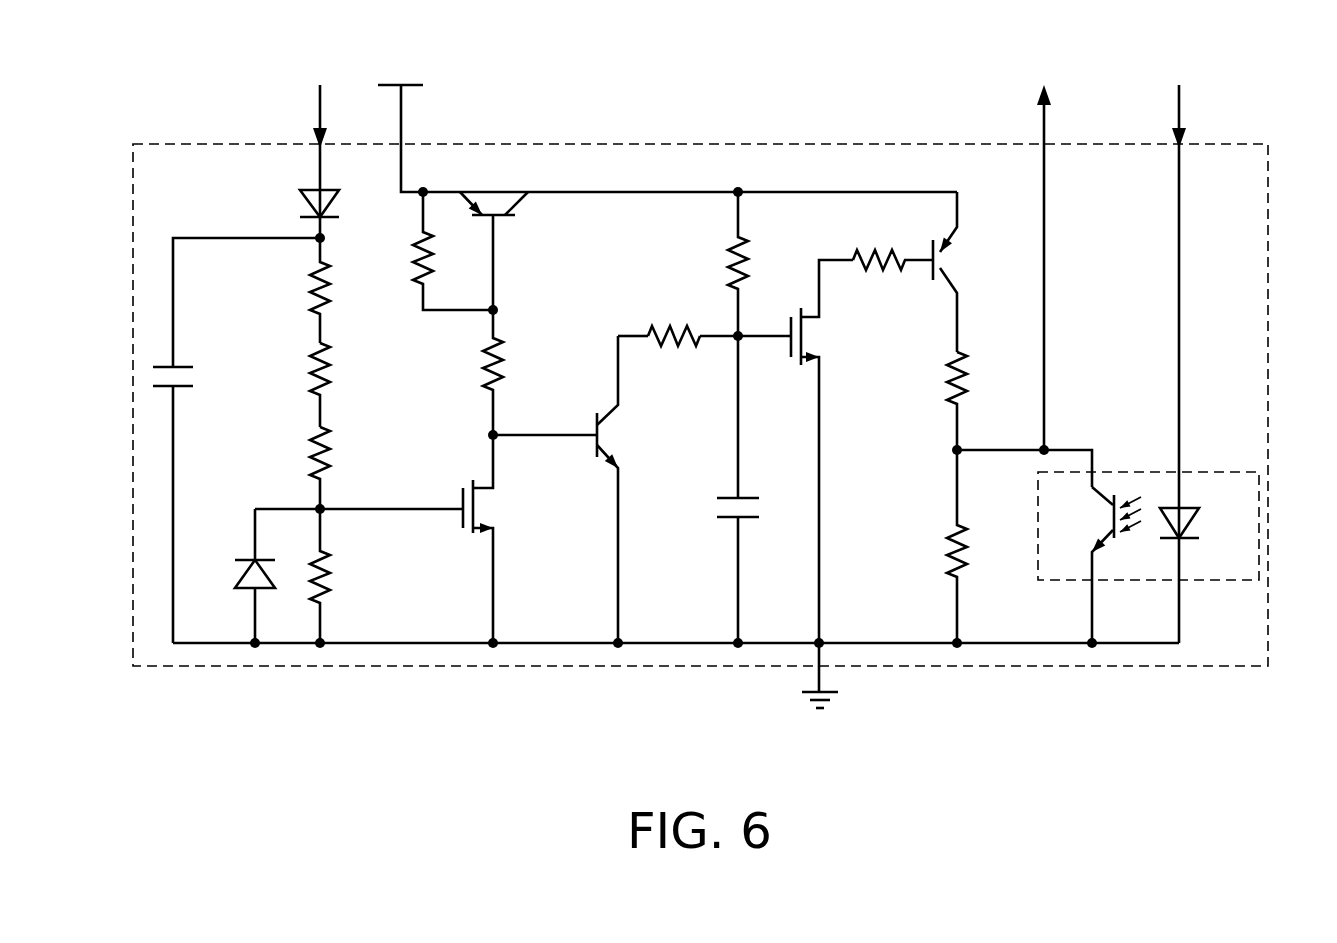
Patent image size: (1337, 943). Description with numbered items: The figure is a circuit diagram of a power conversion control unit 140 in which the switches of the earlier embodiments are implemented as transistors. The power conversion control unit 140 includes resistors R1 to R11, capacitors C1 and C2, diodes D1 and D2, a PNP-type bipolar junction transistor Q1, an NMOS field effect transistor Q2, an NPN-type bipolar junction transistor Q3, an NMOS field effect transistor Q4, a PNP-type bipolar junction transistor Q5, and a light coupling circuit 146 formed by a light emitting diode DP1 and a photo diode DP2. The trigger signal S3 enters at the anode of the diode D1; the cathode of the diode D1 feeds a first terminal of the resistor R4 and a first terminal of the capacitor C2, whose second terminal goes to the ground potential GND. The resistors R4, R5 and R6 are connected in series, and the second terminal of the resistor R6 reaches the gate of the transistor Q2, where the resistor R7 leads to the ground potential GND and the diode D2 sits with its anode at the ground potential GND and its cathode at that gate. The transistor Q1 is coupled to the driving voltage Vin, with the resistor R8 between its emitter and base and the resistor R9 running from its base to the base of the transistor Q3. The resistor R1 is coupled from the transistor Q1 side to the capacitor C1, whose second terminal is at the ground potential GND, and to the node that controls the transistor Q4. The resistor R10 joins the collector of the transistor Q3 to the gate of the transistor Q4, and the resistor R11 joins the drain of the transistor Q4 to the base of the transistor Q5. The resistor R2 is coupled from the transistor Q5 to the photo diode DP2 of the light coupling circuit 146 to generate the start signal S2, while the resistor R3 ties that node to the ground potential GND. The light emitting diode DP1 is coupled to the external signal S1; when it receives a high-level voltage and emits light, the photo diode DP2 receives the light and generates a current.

The power conversion control unit 140 is at (1268, 345).
The light coupling circuit 146 is at (1237, 472).
The diode D1 is at (339, 213).
The diode D2 is at (236, 576).
The capacitor C1 is at (755, 489).
The capacitor C2 is at (194, 380).
The resistor R1 is at (756, 264).
The resistor R2 is at (977, 401).
The resistor R3 is at (977, 546).
The resistor R4 is at (340, 290).
The resistor R5 is at (340, 385).
The resistor R6 is at (340, 468).
The resistor R7 is at (340, 576).
The resistor R8 is at (453, 251).
The resistor R9 is at (514, 372).
The resistor R10 is at (674, 316).
The resistor R11 is at (893, 240).
The PNP-type bipolar junction transistor Q1 is at (494, 233).
The NMOS field effect transistor Q2 is at (494, 539).
The NPN-type bipolar junction transistor Q3 is at (627, 489).
The NMOS field effect transistor Q4 is at (822, 451).
The PNP-type bipolar junction transistor Q5 is at (963, 272).
The light emitting diode DP1 is at (1206, 521).
The photo diode DP2 is at (1094, 565).
The external signal S1 is at (1176, 344).
The start signal S2 is at (1043, 75).
The trigger signal S3 is at (319, 118).
The driving voltage Vin is at (400, 119).
The ground potential GND is at (820, 722).